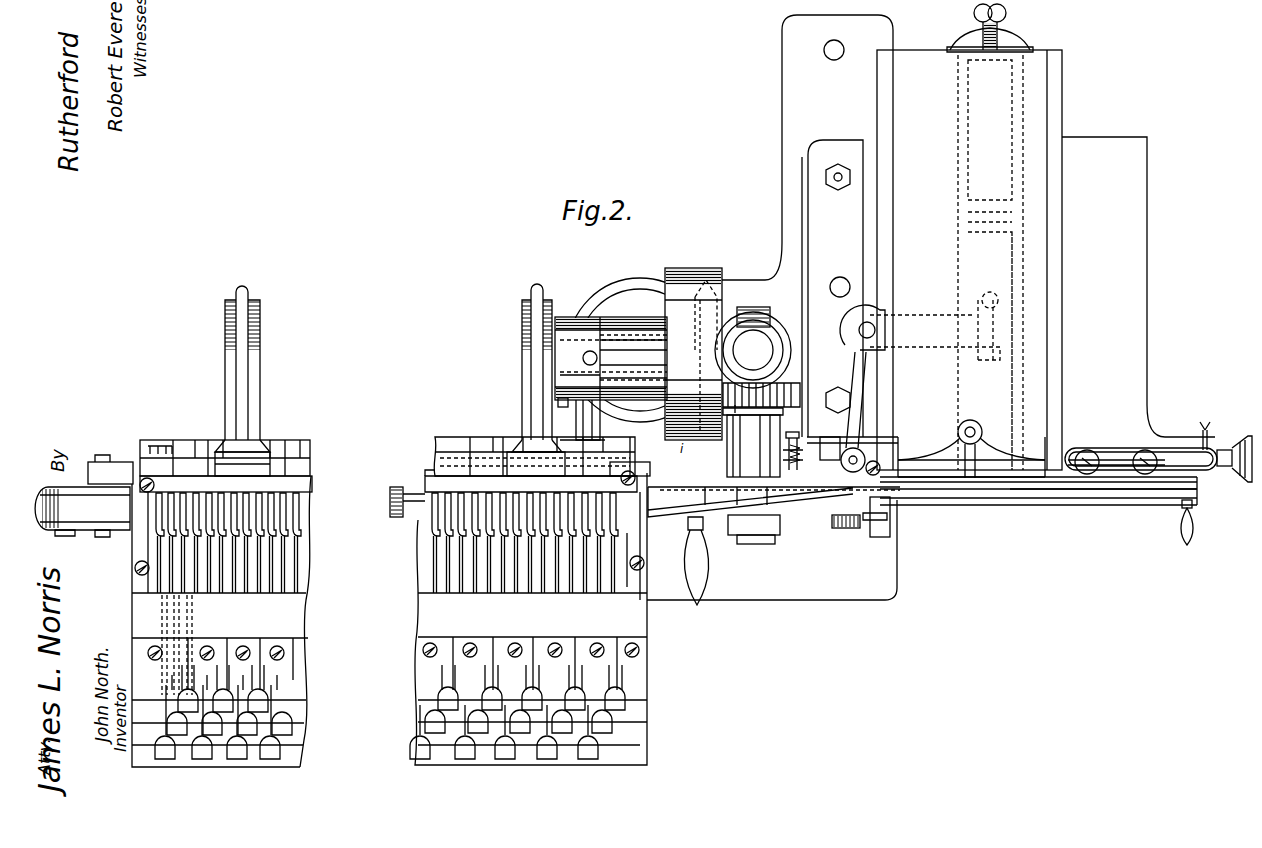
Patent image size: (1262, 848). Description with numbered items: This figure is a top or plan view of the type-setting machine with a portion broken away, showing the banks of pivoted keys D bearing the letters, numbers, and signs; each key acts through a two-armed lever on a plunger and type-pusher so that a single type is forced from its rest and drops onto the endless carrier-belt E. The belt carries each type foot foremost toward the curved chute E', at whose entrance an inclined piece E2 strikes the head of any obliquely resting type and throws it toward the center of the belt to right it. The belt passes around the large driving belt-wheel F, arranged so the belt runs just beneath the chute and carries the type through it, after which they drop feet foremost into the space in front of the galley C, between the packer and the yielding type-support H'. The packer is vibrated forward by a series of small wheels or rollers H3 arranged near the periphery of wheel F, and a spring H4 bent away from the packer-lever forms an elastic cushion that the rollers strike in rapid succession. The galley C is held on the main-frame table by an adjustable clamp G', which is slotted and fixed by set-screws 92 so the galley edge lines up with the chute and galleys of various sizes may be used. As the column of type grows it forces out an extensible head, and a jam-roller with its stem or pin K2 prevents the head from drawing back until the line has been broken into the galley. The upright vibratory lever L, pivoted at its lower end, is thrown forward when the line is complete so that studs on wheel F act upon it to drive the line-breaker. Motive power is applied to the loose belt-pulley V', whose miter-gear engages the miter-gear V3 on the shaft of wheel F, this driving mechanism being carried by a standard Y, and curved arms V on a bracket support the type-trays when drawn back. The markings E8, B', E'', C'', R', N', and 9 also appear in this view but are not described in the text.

The curved arms V is at (388, 368).
The loose belt-pulley V' is at (693, 354).
The miter-gear V3 is at (795, 402).
The gear shaft E8 is at (795, 387).
The standard Y is at (753, 347).
The bar B' is at (240, 472).
The curved chute E' is at (82, 512).
The endless carrier-belt E is at (371, 502).
The inclined piece E2 is at (774, 502).
The rod E'' is at (780, 487).
The driving belt-wheel F is at (754, 551).
The type bars C'' is at (387, 543).
The galley C is at (969, 237).
The pivoted keys D is at (440, 723).
The upright vibratory lever L is at (852, 390).
The rocking arm R' is at (957, 442).
The bracket N' is at (935, 341).
The rail 9 is at (1025, 490).
The type-support H' is at (1038, 505).
The wheels or rollers H3 is at (840, 530).
The spring H4 is at (878, 527).
The adjustable clamp G' is at (1141, 446).
The set-screws 92 is at (1145, 440).
The stem or pin K2 is at (1197, 525).